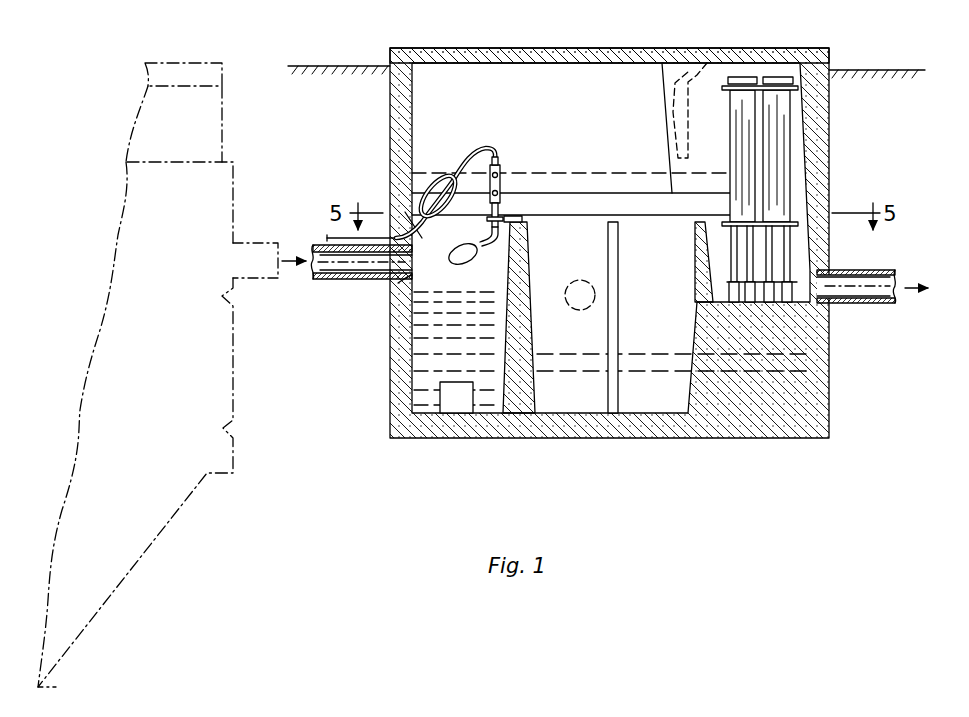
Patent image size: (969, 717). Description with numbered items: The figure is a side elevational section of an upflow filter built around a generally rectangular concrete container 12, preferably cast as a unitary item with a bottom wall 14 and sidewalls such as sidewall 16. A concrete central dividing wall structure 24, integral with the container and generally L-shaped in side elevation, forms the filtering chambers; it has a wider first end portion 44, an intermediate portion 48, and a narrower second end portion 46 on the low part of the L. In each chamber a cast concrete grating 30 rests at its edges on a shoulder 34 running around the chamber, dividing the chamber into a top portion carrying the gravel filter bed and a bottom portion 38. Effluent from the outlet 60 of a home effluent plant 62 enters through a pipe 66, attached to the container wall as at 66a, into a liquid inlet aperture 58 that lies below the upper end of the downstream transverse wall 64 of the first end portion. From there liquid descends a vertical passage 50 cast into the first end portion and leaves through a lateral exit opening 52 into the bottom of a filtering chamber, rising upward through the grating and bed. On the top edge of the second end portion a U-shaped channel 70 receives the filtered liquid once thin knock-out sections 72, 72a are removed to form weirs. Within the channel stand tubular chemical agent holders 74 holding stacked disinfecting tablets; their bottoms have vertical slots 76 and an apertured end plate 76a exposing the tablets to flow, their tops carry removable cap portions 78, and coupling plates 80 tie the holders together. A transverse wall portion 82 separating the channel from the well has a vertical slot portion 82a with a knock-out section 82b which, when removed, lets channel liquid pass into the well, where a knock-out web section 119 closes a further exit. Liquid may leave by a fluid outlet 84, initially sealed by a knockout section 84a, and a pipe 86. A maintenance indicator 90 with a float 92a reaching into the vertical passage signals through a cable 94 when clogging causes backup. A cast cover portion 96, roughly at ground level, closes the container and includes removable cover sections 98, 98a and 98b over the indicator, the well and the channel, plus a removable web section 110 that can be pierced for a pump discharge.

The concrete container 12 is at (831, 388).
The bottom wall 14 is at (732, 434).
The sidewall 16 is at (400, 376).
The central dividing wall structure 24 is at (648, 208).
The cast concrete grating 30 is at (565, 366).
The shoulder 34 is at (398, 354).
The bottom portion 38 is at (652, 402).
The first end portion 44 is at (410, 166).
The second end portion 46 is at (808, 332).
The intermediate portion 48 is at (582, 215).
The vertical passage 50 is at (405, 212).
The first lateral exit opening 52 is at (465, 400).
The liquid inlet aperture 58 is at (388, 272).
The outlet 60 is at (245, 250).
The home effluent plant 62 is at (244, 426).
The downstream transverse wall 64 is at (526, 287).
The pipe 66 is at (326, 240).
The pipe attachment 66a is at (404, 290).
The channel 70 is at (702, 306).
The knock-out section 72 is at (702, 290).
The knock-out section 72a is at (897, 263).
The chemical agent holder 74 is at (782, 212).
The slot 76 is at (768, 274).
The apertured end plate 76a is at (781, 310).
The removable cap portion 78 is at (735, 77).
The coupling plate 80 is at (796, 90).
The transverse wall portion 82 is at (697, 246).
The vertical slot portion 82a is at (713, 246).
The knock-out section 82b is at (696, 284).
The fluid outlet 84 is at (838, 304).
The knockout section 84a is at (862, 302).
The pipe 86 is at (862, 271).
The maintenance indicator 90 is at (480, 250).
The float 92a is at (462, 259).
The cable 94 is at (478, 158).
The cast cover portion 96 is at (386, 104).
The removable cover section 98 is at (488, 51).
The removable cover section 98a is at (588, 49).
The removable cover section 98b is at (750, 49).
The removable web section 110 is at (703, 48).
The knock-out web section 119 is at (570, 304).